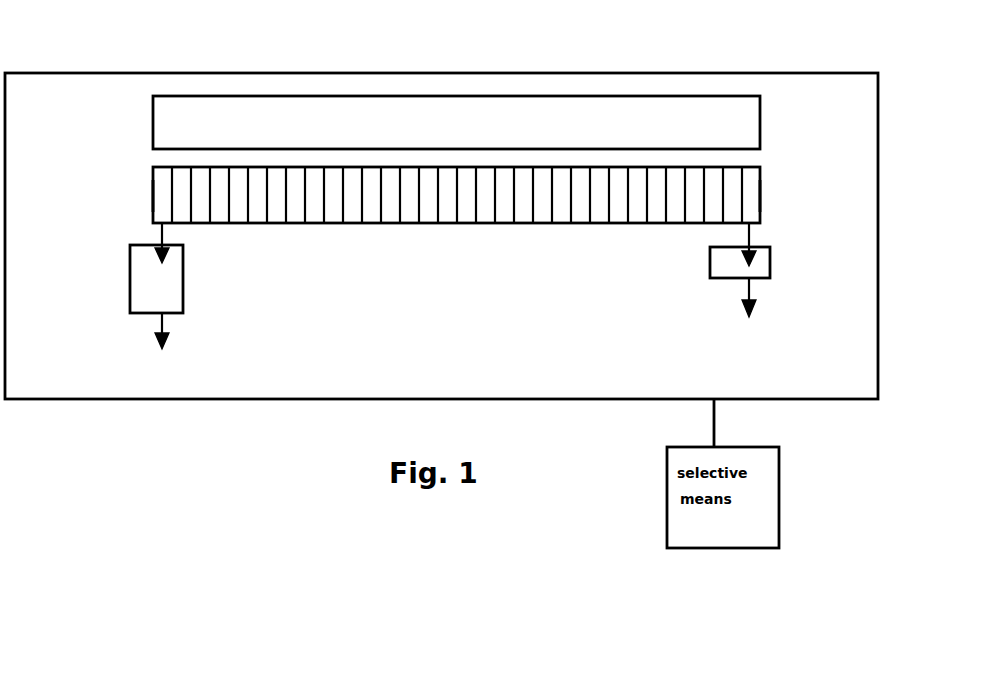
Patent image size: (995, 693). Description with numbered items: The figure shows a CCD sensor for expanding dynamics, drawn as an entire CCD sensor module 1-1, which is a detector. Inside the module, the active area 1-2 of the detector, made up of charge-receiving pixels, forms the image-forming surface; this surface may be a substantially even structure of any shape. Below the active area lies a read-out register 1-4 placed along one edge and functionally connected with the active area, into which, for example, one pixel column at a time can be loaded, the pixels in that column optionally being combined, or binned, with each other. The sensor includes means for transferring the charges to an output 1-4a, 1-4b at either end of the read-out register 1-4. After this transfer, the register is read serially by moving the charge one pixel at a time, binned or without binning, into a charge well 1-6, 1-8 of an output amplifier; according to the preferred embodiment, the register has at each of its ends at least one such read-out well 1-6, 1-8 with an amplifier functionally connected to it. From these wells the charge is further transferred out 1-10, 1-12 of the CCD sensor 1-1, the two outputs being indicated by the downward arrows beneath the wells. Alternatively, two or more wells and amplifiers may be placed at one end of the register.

The CCD sensor module 1-1 is at (814, 84).
The active area 1-2 is at (757, 118).
The read-out register 1-4 is at (760, 180).
The output of the read-out register 1-4a is at (154, 194).
The output of the read-out register 1-4b is at (758, 200).
The charge well 1-6 is at (132, 282).
The charge well 1-8 is at (768, 265).
The output 1-10 is at (166, 330).
The output 1-12 is at (752, 295).